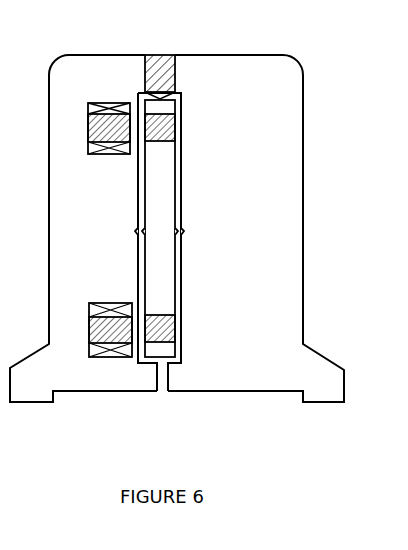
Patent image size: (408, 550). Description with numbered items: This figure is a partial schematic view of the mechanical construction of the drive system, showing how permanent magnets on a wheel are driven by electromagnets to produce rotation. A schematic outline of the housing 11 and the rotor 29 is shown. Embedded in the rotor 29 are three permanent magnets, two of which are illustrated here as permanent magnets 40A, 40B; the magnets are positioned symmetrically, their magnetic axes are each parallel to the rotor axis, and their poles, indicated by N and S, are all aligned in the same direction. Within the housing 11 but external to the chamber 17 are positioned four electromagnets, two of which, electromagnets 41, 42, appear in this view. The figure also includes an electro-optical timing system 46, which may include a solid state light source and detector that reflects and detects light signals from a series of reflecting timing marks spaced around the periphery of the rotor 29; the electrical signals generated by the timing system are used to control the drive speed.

The housing 11 is at (88, 55).
The electro-optical timing system 46 is at (177, 92).
The chamber 17 is at (182, 274).
The rotor 29 is at (140, 210).
The permanent magnet 40A is at (176, 135).
The permanent magnet 40B is at (176, 335).
The electromagnet 41 is at (130, 137).
The electromagnet 42 is at (89, 326).